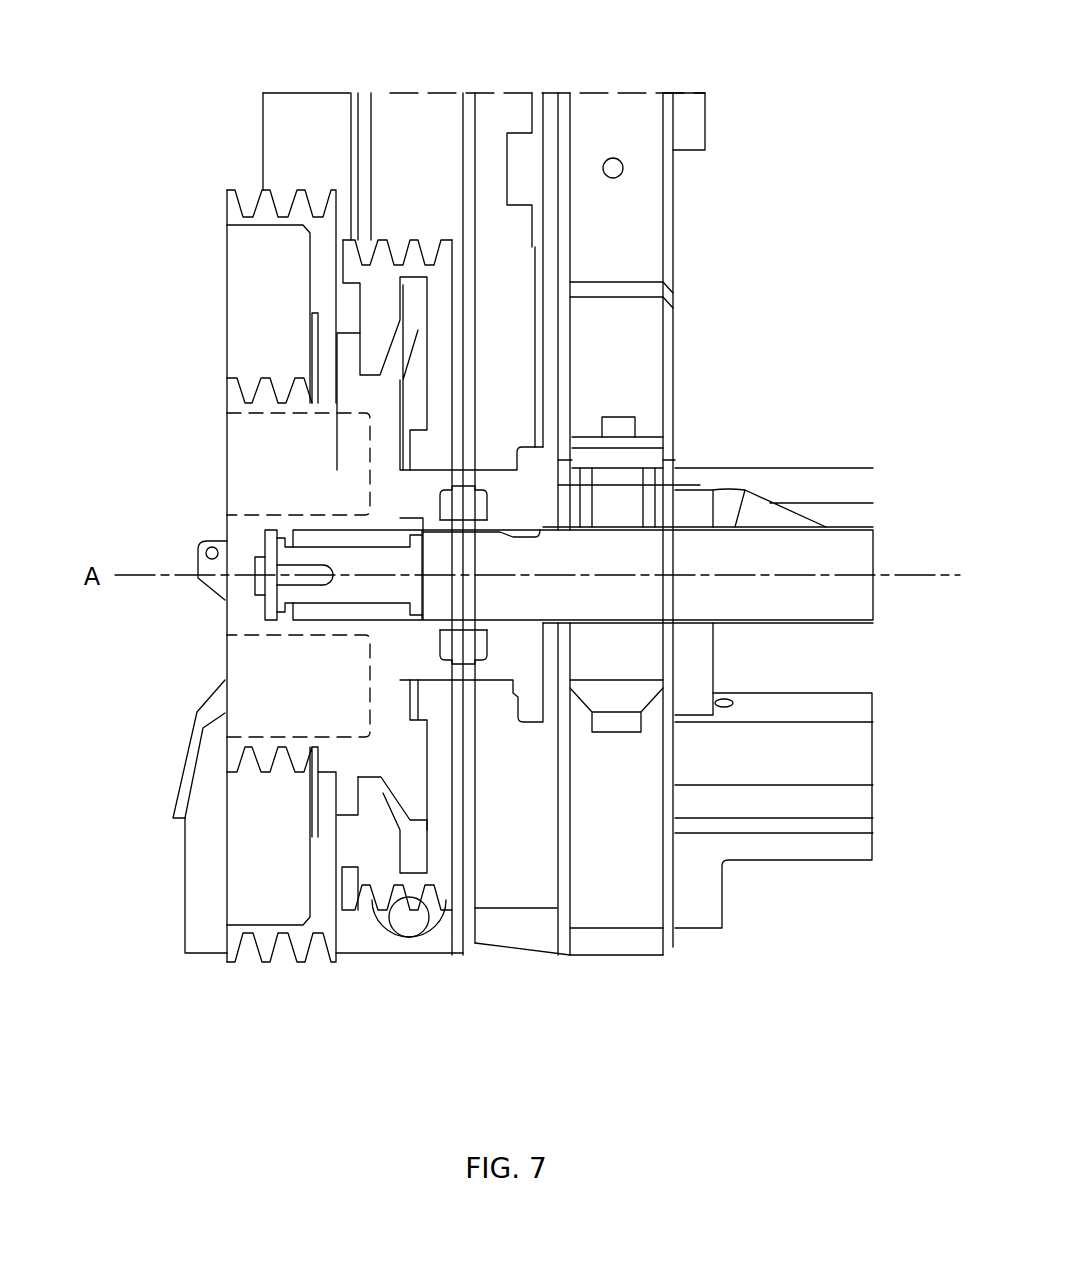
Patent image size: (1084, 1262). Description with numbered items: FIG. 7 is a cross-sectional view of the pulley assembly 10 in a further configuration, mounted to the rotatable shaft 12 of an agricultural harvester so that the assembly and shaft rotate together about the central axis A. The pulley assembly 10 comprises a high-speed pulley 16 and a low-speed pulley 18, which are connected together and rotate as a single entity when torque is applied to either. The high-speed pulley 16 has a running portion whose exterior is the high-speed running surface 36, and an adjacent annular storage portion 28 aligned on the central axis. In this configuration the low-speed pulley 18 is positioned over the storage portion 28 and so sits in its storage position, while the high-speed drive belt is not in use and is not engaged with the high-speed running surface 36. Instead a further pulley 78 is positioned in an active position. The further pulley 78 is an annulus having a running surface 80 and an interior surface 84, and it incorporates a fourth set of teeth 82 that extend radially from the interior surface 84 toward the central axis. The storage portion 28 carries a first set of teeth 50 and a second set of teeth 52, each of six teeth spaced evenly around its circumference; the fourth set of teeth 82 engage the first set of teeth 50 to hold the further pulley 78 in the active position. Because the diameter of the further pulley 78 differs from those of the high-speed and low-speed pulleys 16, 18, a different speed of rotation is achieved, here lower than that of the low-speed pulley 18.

The pulley assembly 10 is at (107, 276).
The rotatable shaft 12 is at (873, 543).
The high-speed pulley 16 is at (227, 408).
The low-speed pulley 18 is at (440, 240).
The storage portion 28 is at (357, 753).
The high-speed running surface 36 is at (257, 378).
The first set of teeth 50 is at (343, 853).
The second set of teeth 52 is at (417, 853).
The further pulley 78 is at (212, 203).
The running surface 80 is at (252, 203).
The fourth set of teeth 82 is at (327, 217).
The interior surface 84 is at (258, 927).